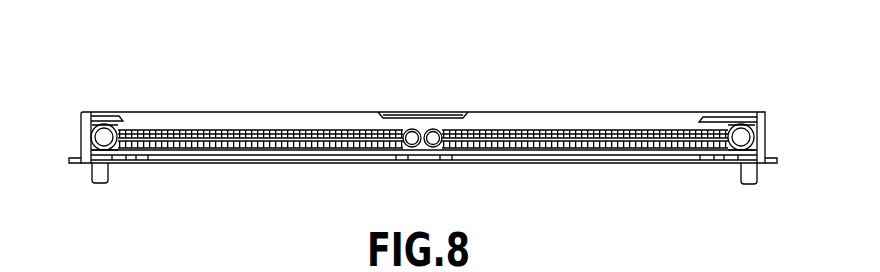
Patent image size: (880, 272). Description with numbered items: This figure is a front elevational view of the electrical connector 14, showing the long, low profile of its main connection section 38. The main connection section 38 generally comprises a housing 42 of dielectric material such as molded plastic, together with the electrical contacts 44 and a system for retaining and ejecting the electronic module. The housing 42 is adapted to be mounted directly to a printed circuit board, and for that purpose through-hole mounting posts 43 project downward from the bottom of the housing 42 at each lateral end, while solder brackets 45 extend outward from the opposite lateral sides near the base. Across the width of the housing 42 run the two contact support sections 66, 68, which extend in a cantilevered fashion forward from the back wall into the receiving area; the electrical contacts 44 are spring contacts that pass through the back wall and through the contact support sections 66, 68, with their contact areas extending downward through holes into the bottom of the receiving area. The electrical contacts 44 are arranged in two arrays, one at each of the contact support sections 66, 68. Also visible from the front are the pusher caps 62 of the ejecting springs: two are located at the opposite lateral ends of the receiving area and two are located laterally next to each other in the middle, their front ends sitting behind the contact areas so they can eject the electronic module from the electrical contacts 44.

The connector 14 is at (82, 70).
The main connection section 38 is at (80, 138).
The housing 42 is at (180, 112).
The through-hole mounting posts 43 is at (106, 184).
The electrical contacts 44 is at (238, 148).
The solder brackets 45 is at (72, 162).
The pusher caps 62 is at (106, 134).
The contact support section 66 is at (270, 131).
The contact support section 68 is at (580, 132).